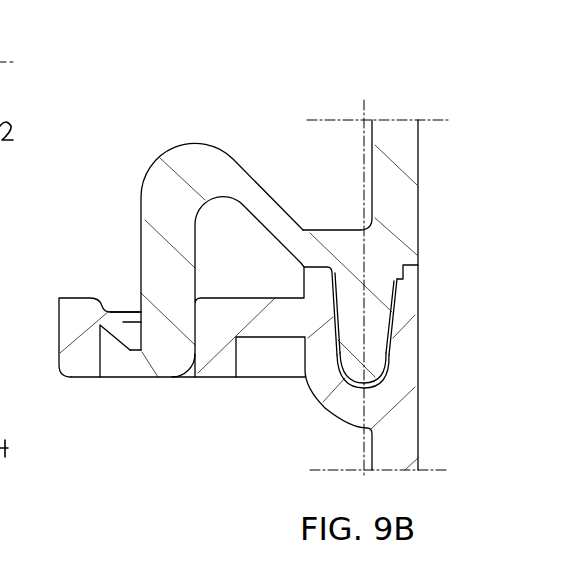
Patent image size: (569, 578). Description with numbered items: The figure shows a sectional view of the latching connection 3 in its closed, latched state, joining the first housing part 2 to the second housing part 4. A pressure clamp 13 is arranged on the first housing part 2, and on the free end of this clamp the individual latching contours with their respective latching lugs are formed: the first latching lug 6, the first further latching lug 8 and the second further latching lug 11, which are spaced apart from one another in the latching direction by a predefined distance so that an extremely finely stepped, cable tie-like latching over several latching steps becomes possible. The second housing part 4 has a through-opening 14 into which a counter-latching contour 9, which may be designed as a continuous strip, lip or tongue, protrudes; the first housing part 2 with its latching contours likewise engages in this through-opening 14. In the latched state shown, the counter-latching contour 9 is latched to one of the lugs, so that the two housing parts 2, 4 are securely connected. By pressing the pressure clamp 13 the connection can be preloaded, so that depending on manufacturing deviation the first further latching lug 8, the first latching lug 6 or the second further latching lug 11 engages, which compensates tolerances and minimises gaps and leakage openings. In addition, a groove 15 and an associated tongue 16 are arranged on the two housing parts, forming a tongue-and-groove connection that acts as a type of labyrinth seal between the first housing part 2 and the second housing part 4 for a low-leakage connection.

The first housing part 2 is at (404, 183).
The latching connection 3 is at (198, 238).
The second housing part 4 is at (405, 413).
The first latching lug 6 is at (130, 353).
The first further latching lug 8 is at (140, 350).
The counter-latching contour 9 is at (118, 330).
The second further latching lug 11 is at (139, 345).
The pressure clamp 13 is at (196, 158).
The through-opening 14 is at (110, 365).
The groove 15 is at (390, 381).
The tongue 16 is at (375, 320).